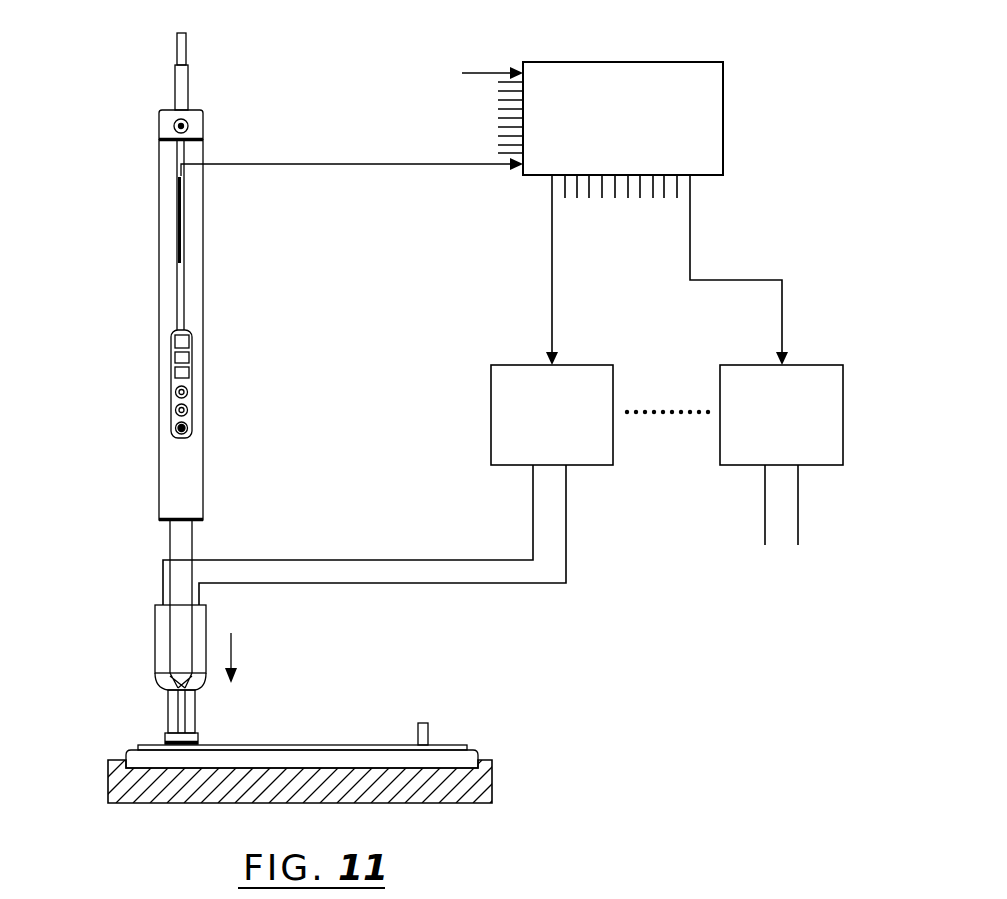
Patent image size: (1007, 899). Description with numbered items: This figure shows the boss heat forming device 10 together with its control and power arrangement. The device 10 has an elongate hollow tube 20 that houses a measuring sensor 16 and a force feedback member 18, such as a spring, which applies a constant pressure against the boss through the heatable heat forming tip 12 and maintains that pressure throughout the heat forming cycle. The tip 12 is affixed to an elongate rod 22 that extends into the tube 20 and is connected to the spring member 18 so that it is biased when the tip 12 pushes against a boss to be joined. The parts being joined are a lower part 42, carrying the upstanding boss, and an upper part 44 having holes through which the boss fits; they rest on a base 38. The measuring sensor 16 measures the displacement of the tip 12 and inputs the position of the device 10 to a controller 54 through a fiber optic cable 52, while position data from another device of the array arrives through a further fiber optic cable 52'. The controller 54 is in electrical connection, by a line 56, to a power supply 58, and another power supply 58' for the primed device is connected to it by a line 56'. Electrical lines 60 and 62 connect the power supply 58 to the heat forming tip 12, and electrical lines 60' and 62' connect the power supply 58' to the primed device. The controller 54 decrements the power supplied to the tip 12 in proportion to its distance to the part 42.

The boss heat forming device 10 is at (216, 134).
The heatable heat forming tip 12 is at (168, 713).
The measuring sensor 16 is at (182, 287).
The force feedback member 18 is at (173, 343).
The elongate hollow tube 20 is at (168, 200).
The elongate rod 22 is at (175, 538).
The base 38 is at (428, 787).
The lower part 42 is at (138, 762).
The upper part 44 is at (337, 745).
The fiber optic cable 52 is at (352, 147).
The fiber optic cable 52' is at (478, 52).
The controller 54 is at (629, 62).
The line 56 is at (578, 270).
The line 56' is at (768, 270).
The power supply 58 is at (569, 393).
The power supply 58' is at (800, 393).
The electrical lead 60 is at (348, 535).
The electrical line 60' is at (734, 505).
The electrical lead 62 is at (408, 535).
The electrical line 62' is at (827, 505).